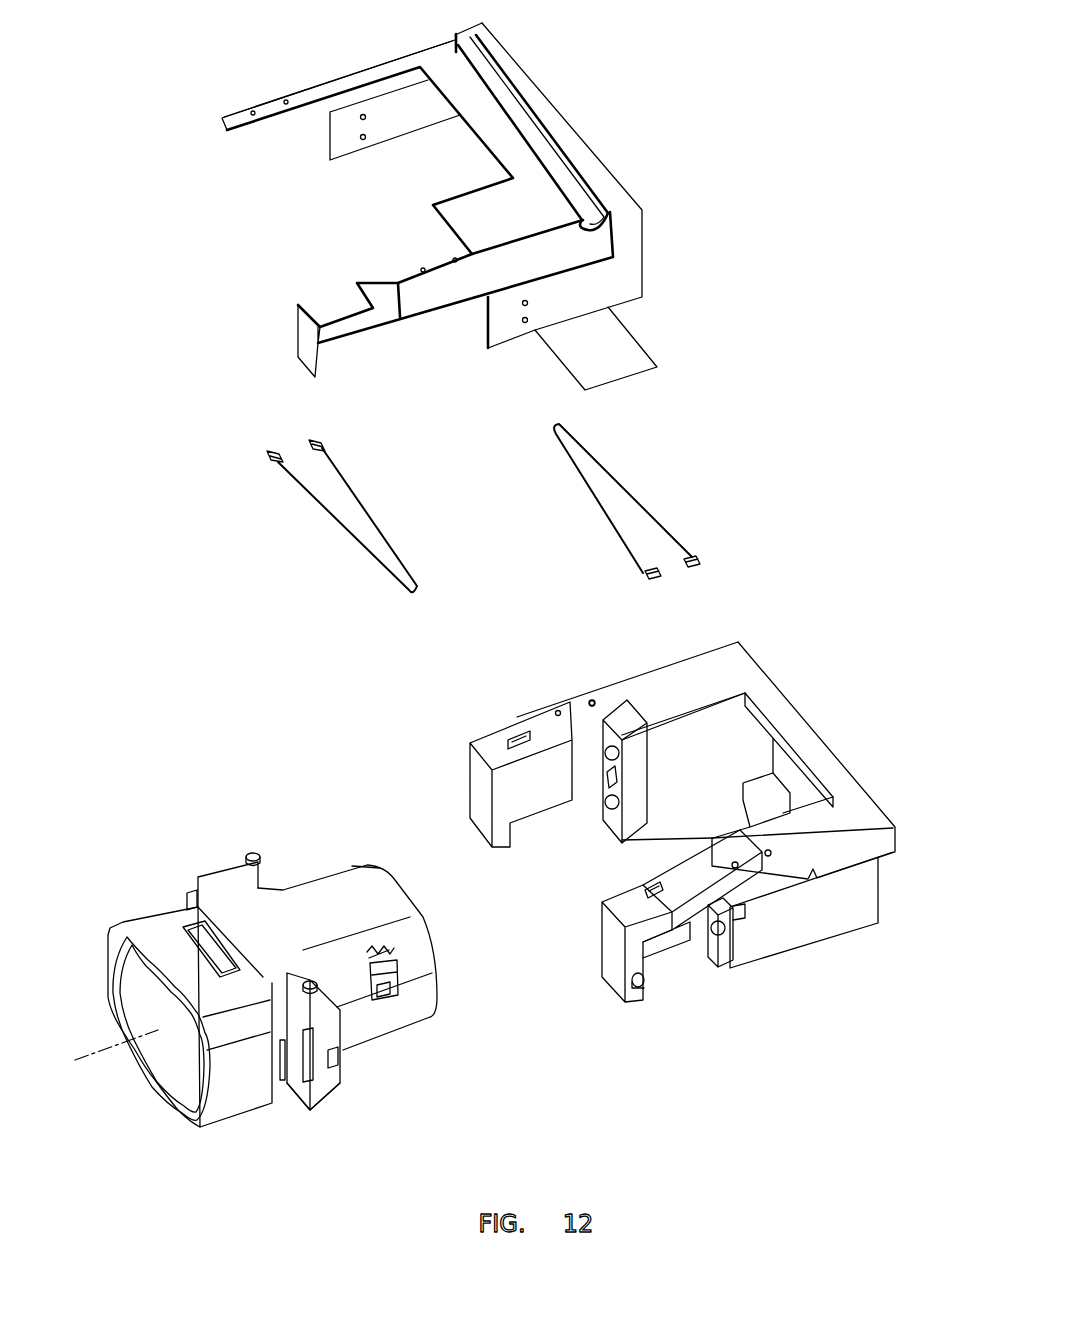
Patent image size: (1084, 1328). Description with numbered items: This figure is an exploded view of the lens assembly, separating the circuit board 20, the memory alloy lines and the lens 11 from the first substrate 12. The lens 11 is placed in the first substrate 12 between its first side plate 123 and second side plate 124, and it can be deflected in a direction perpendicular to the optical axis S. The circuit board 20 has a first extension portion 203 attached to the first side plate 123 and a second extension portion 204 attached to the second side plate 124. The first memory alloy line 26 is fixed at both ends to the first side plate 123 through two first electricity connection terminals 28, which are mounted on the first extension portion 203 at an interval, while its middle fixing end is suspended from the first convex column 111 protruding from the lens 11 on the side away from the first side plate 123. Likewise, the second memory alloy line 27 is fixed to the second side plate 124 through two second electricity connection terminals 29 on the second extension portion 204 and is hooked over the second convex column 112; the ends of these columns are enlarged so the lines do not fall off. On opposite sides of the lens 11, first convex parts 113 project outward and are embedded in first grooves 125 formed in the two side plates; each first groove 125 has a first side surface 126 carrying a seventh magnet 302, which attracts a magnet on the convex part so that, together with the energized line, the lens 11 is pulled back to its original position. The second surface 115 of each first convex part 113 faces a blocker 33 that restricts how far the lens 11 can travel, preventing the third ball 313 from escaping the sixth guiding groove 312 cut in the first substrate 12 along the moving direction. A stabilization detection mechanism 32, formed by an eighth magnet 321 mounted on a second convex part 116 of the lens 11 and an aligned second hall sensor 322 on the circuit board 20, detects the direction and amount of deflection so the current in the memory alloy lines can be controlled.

The circuit board 20 is at (552, 120).
The first extension portion 203 is at (407, 272).
The second extension portion 204 is at (281, 107).
The first memory alloy line 26 is at (572, 433).
The second memory alloy line 27 is at (397, 553).
The first electricity connection terminal 28 is at (695, 558).
The second electricity connection terminal 29 is at (323, 436).
The lens 11 is at (108, 958).
The first convex column 111 is at (250, 858).
The second convex column 112 is at (338, 1008).
The first convex part 113 is at (217, 882).
The second surface 115 is at (200, 896).
The second convex part 116 is at (380, 993).
The optical axis S is at (92, 1051).
The blocker 33 is at (313, 1060).
The stabilization detection mechanism 32 is at (492, 920).
The eighth magnet 321 is at (393, 973).
The second hall sensor 322 is at (377, 947).
The first substrate 12 is at (837, 781).
The first side plate 123 is at (838, 906).
The second side plate 124 is at (700, 753).
The first groove 125 is at (582, 790).
The first side surface 126 is at (540, 745).
The seventh magnet 302 is at (605, 755).
The sixth guiding groove 312 is at (594, 700).
The third ball 313 is at (610, 780).